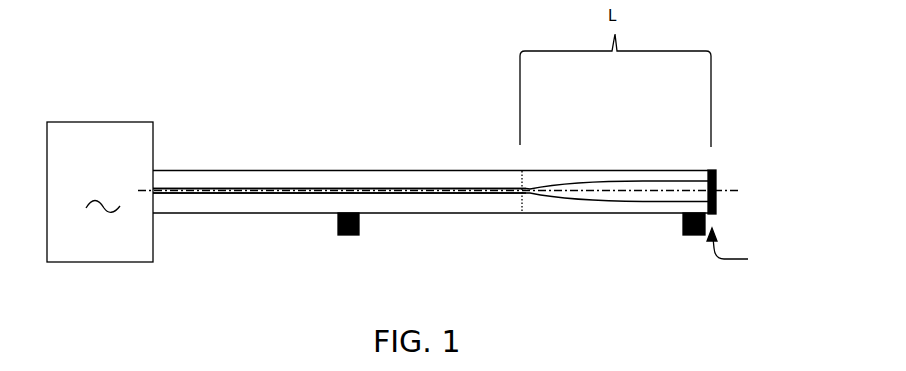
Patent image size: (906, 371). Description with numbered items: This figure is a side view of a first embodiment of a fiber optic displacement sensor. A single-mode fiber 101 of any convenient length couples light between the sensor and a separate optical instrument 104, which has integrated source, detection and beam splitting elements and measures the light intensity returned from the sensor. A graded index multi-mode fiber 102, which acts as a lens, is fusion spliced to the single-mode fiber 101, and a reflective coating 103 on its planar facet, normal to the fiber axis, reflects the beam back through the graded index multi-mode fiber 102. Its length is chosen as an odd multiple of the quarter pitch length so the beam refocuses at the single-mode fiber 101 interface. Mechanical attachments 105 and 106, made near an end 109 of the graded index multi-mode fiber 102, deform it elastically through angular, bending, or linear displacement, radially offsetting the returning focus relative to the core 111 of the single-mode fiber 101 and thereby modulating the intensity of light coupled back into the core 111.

The single-mode fiber 101 is at (411, 169).
The graded index multi-mode fiber 102 is at (614, 168).
The reflective coating 103 is at (713, 168).
The optical instrument 104 is at (100, 192).
The mechanical attachment 105 is at (351, 238).
The mechanical attachment 106 is at (695, 238).
The end of the graded index multi-mode fiber 109 is at (745, 249).
The core of the single-mode fiber 111 is at (490, 198).